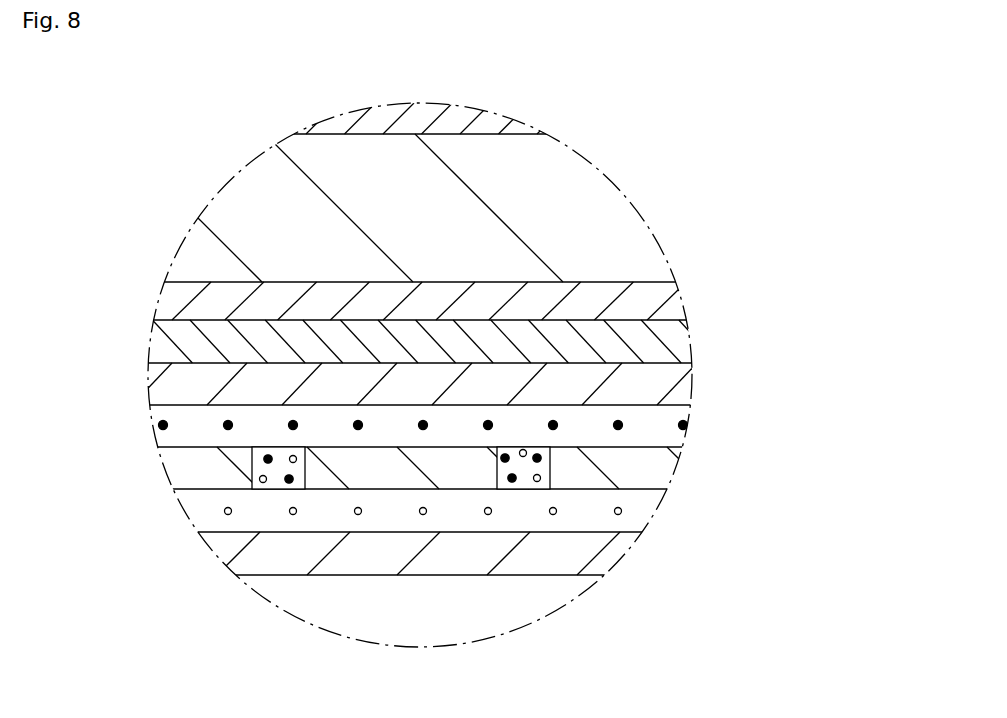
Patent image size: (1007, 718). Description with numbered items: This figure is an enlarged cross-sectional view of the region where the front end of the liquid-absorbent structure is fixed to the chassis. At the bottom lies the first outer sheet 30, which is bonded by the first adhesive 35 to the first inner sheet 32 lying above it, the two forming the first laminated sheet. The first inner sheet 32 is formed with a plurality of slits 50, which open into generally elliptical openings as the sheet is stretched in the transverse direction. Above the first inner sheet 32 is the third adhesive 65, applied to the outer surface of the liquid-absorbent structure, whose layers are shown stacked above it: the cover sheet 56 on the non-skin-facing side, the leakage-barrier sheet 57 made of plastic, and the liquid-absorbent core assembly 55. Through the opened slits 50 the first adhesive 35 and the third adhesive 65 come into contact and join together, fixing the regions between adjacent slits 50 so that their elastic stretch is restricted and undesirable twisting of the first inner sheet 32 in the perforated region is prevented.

The liquid-absorbent core assembly 55 is at (618, 207).
The leakage-barrier sheet 57 is at (647, 298).
The cover sheet 56 is at (660, 378).
The third adhesive 65 is at (290, 478).
The first inner sheet 32 is at (647, 463).
The slits 50 is at (253, 465).
The first adhesive 35 is at (290, 511).
The first outer sheet 30 is at (588, 550).